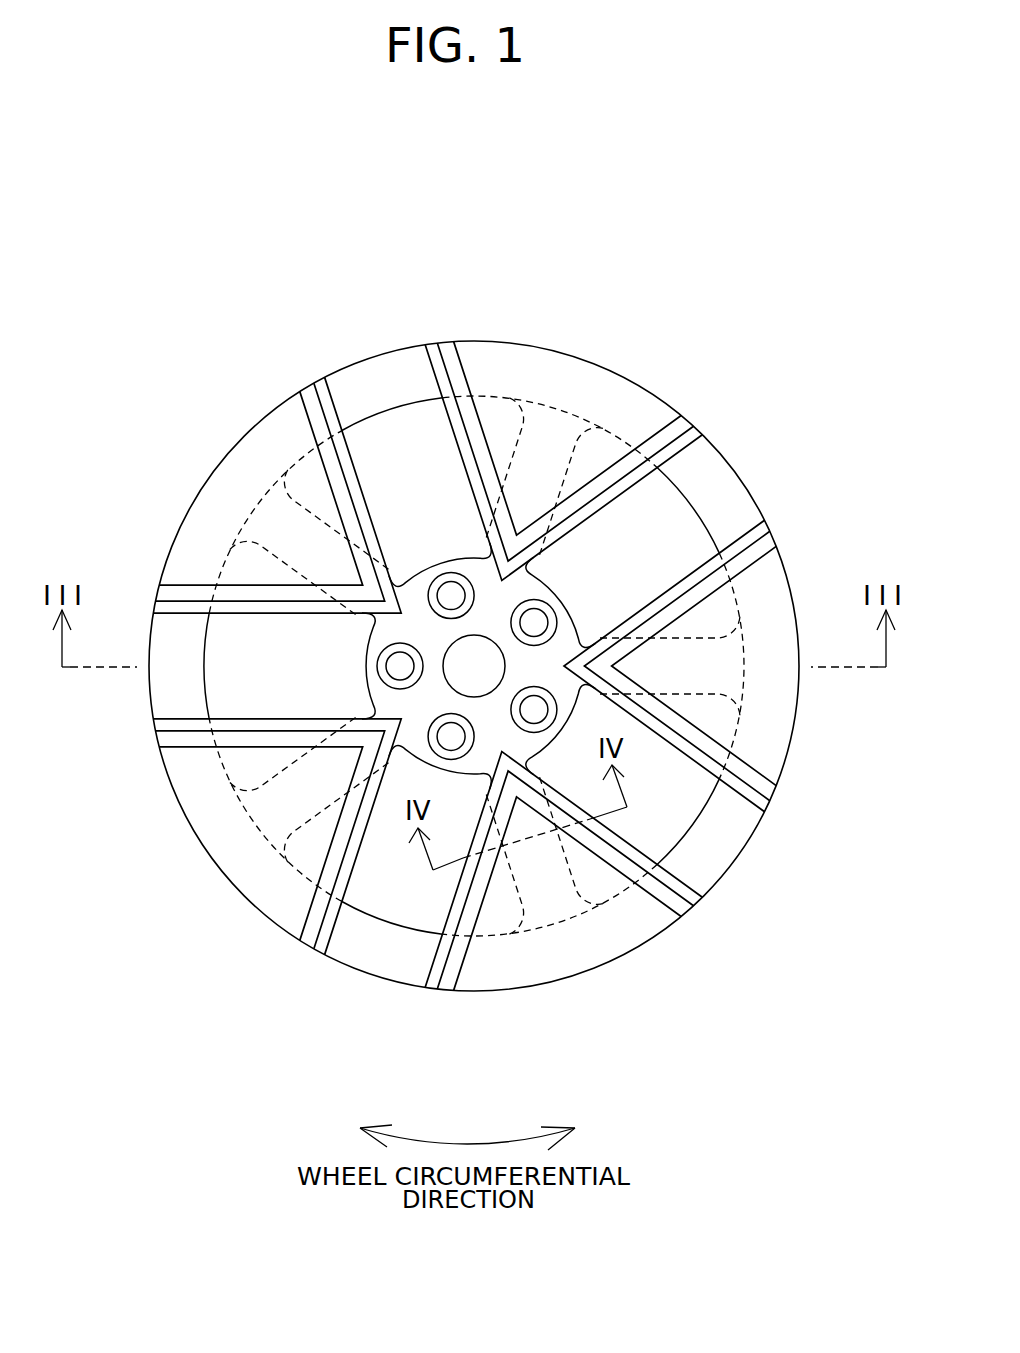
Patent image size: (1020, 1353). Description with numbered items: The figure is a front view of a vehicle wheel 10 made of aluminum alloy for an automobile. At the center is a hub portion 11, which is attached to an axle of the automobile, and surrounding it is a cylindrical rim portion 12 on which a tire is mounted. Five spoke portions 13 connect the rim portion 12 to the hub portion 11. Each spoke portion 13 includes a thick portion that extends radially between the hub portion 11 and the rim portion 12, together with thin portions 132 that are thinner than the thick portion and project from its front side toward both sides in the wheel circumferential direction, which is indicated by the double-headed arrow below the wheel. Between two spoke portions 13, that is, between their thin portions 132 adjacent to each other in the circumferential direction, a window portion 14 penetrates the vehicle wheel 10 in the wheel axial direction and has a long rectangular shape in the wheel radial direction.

The vehicle wheel 10 is at (468, 298).
The hub portion 11 is at (573, 638).
The rim portion 12 is at (205, 856).
The spoke portion 13 is at (360, 558).
The thin portion 132 is at (315, 485).
The window portion 14 is at (400, 440).